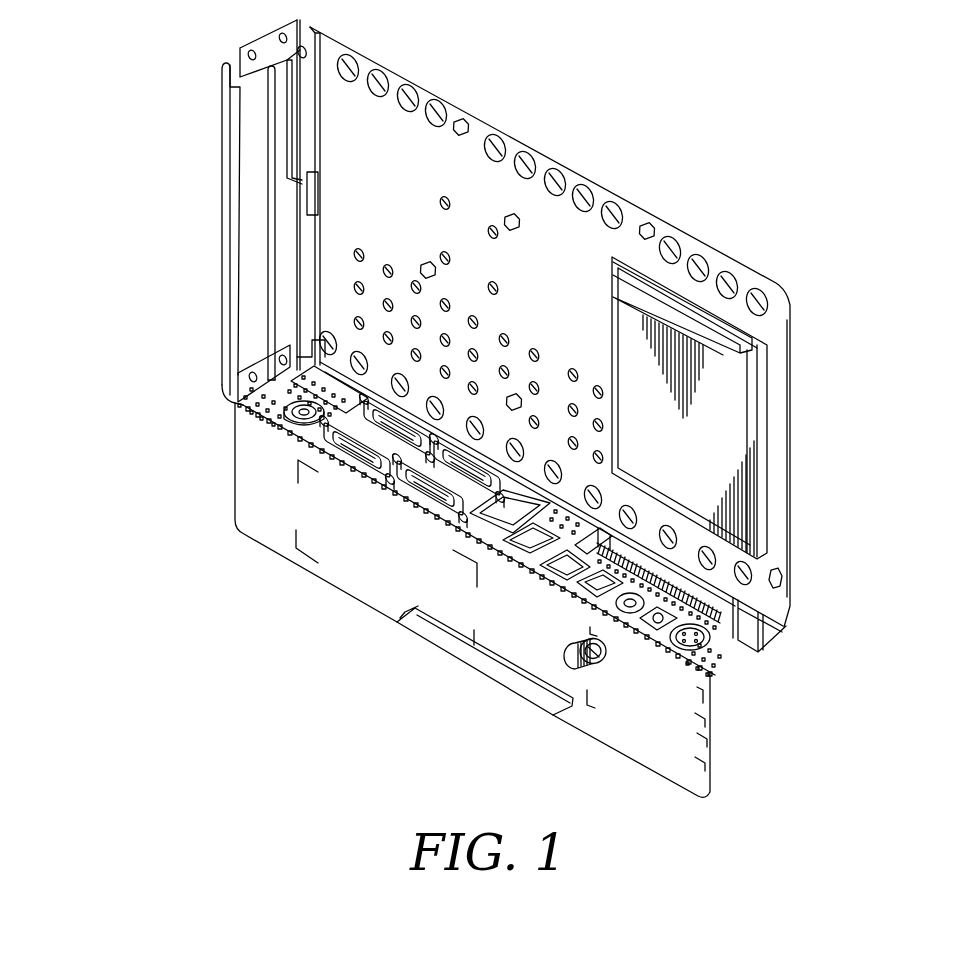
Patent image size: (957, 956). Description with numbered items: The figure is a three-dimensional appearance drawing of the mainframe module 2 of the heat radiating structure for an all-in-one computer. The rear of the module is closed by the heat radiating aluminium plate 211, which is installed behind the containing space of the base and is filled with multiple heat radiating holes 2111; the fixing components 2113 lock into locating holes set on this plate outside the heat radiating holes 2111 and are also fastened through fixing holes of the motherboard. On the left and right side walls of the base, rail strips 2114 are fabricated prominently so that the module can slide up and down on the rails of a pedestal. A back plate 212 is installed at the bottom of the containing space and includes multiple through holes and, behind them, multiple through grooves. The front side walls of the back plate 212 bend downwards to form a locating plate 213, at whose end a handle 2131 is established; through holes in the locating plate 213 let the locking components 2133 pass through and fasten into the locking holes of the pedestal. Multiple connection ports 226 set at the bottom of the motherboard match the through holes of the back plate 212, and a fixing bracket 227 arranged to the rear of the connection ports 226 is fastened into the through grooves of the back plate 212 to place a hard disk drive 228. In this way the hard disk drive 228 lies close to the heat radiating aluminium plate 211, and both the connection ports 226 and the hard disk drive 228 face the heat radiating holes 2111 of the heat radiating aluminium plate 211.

The mainframe module 2 is at (455, 92).
The heat radiating aluminium plate 211 is at (777, 530).
The heat radiating holes 2111 is at (782, 614).
The fixing components 2113 is at (782, 580).
The rail strips 2114 is at (282, 190).
The back plate 212 is at (720, 660).
The locating plate 213 is at (665, 722).
The handle 2131 is at (467, 658).
The locking components 2133 is at (577, 670).
The connection ports 226 is at (357, 473).
The fixing bracket 227 is at (760, 393).
The hard disk drive 228 is at (723, 376).